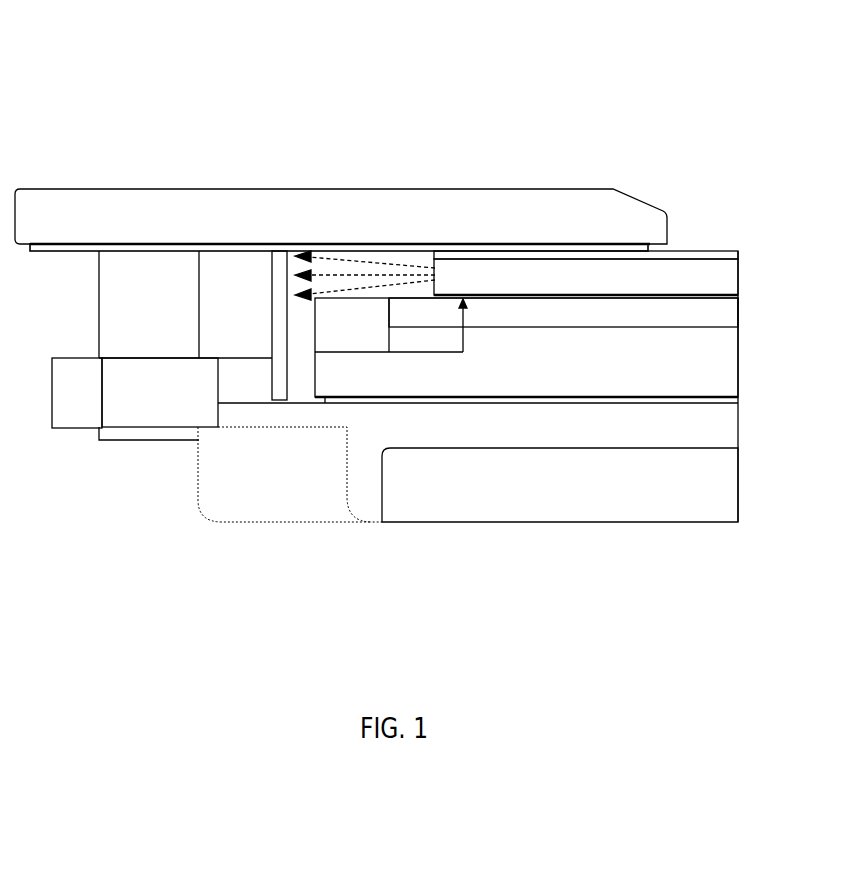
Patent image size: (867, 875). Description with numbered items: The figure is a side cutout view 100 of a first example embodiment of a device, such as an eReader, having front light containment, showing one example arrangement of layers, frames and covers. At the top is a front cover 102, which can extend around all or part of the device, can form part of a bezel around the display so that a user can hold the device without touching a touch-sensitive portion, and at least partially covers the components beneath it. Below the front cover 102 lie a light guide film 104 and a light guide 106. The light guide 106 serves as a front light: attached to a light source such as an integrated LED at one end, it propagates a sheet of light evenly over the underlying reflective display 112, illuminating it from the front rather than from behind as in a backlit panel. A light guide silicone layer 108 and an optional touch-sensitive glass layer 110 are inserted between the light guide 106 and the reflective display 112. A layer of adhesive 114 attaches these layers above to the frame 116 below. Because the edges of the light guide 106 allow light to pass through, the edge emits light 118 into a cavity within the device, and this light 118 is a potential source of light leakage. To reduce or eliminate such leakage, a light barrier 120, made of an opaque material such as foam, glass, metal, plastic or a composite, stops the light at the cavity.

The side cutout view 100 is at (422, 60).
The front cover 102 is at (108, 202).
The light guide film 104 is at (650, 245).
The light guide 106 is at (595, 280).
The light guide silicone layer 108 is at (540, 300).
The touch-sensitive glass layer 110 is at (497, 310).
The reflective display 112 is at (682, 357).
The layer of adhesive 114 is at (620, 400).
The frame 116 is at (545, 480).
The light 118 is at (343, 280).
The light barrier 120 is at (292, 402).